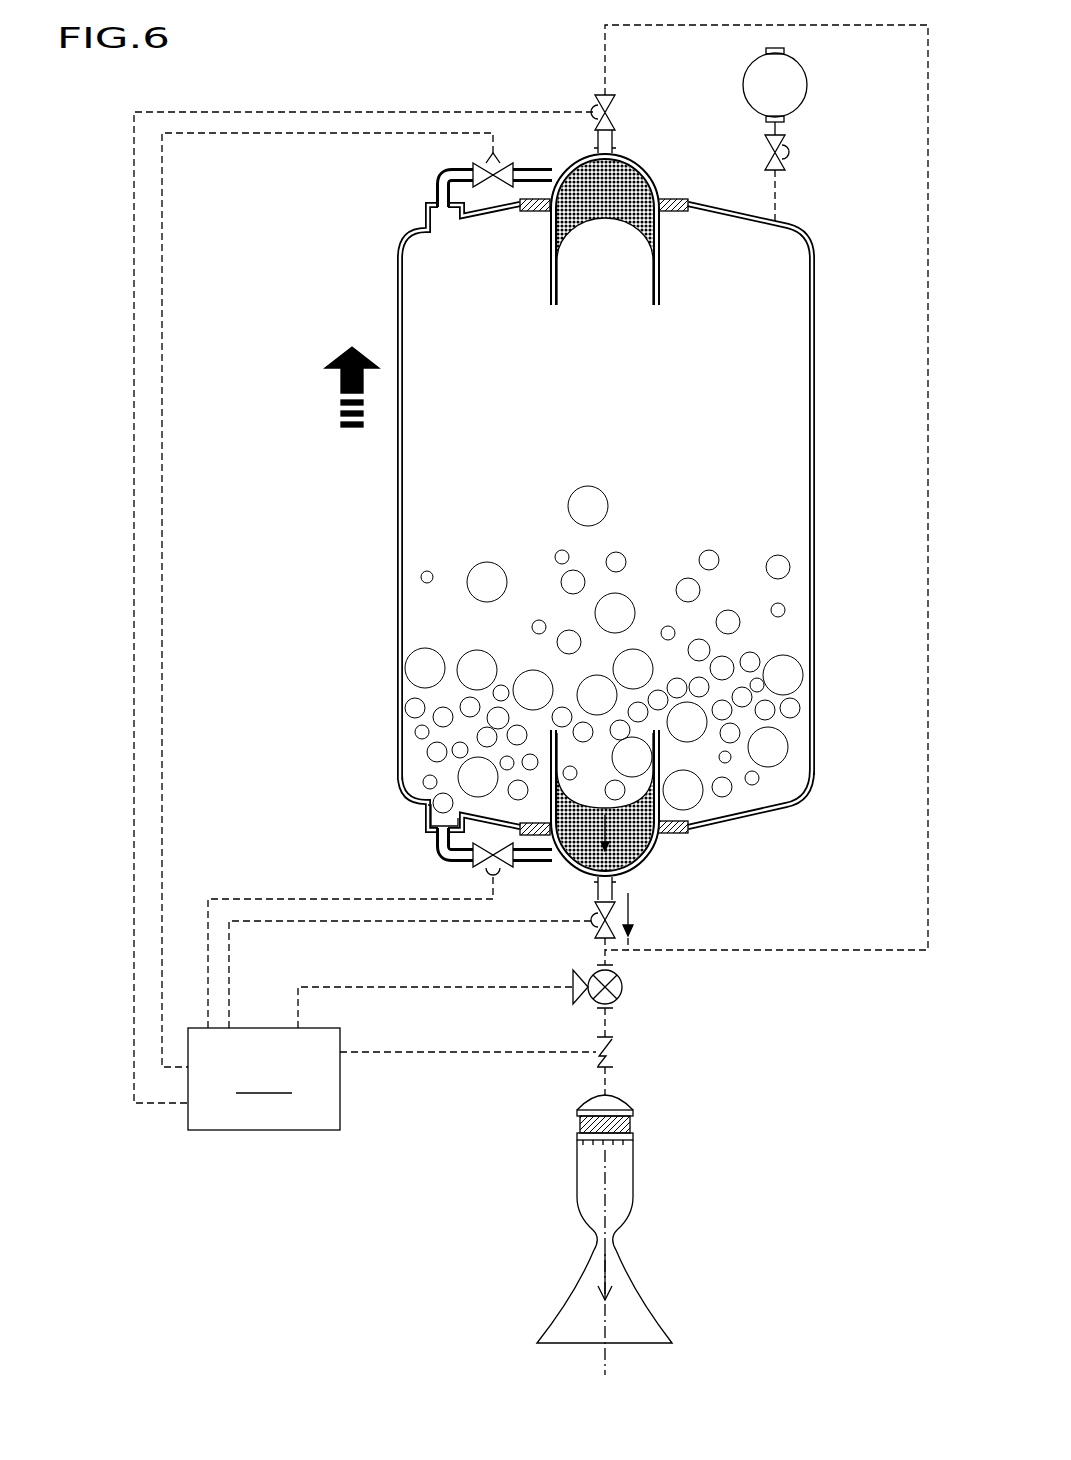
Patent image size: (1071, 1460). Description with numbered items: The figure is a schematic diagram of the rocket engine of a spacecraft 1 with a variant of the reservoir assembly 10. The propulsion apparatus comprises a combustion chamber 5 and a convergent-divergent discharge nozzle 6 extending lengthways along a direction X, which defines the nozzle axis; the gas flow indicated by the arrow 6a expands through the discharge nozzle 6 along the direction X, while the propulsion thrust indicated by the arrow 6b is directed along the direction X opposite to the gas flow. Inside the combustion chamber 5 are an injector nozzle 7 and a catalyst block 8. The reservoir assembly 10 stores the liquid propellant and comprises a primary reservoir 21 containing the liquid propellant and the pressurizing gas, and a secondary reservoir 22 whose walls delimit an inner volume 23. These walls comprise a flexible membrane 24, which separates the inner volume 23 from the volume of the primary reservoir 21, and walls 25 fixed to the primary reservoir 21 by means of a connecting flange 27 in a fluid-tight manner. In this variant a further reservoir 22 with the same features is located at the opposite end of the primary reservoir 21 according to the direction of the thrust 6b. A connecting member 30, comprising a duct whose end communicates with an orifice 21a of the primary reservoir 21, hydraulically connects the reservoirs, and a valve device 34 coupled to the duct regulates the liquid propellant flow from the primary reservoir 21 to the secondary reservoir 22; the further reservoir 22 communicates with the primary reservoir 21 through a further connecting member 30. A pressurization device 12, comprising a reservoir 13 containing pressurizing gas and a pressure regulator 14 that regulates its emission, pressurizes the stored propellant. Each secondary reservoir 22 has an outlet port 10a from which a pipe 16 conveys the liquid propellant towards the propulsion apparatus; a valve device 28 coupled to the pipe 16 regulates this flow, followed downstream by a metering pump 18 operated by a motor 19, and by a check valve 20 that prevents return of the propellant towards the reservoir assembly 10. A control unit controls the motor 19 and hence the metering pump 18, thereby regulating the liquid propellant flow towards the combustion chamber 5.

The spacecraft 1 is at (112, 242).
The combustion chamber 5 is at (590, 1190).
The discharge nozzle 6 is at (647, 1273).
The arrow indicating gas flow 6a is at (604, 1290).
The arrow indicating propulsion thrust 6b is at (340, 388).
The injector nozzle 7 is at (593, 1143).
The catalyst block 8 is at (597, 1115).
The reservoir assembly 10 is at (820, 469).
The outlet port 10a is at (613, 150).
The pressurization device 12 is at (802, 125).
The reservoir 13 is at (753, 53).
The pressure regulator 14 is at (786, 149).
The pipe 16 is at (597, 883).
The metering pump 18 is at (622, 1000).
The motor 19 is at (573, 1000).
The check valve 20 is at (613, 1052).
The primary reservoir 21 is at (395, 553).
The orifice 21a is at (436, 795).
The secondary reservoir 22 is at (661, 174).
The inner volume 23 is at (662, 222).
The flexible membrane 24 is at (580, 235).
The fixed walls 25 is at (550, 240).
The connecting flange 27 is at (688, 834).
The valve device 28 is at (598, 95).
The connecting member 30 is at (428, 171).
The valve device 34 is at (473, 182).
The direction X is at (605, 1318).